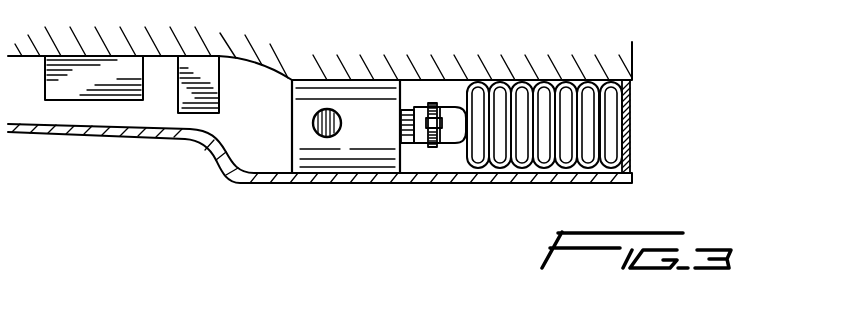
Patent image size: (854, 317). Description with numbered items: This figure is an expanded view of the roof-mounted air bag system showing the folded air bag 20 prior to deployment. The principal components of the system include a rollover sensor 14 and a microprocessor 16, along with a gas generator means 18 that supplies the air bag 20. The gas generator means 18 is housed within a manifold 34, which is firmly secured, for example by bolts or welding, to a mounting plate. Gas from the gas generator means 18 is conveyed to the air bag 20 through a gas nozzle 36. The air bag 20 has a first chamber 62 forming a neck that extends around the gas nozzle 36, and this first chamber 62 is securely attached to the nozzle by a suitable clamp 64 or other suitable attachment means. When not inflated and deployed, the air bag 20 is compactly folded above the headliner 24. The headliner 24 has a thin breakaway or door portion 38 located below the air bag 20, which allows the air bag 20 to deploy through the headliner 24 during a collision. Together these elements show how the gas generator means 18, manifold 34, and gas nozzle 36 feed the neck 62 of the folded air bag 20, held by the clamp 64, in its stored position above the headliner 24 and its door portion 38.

The rollover sensor 14 is at (177, 104).
The microprocessor 16 is at (98, 100).
The gas generator means 18 is at (330, 108).
The air bag 20 is at (525, 162).
The headliner 24 is at (232, 182).
The manifold 34 is at (345, 142).
The gas nozzle 36 is at (408, 146).
The breakaway or door portion 38 is at (630, 115).
The first chamber 62 is at (452, 117).
The clamp 64 is at (433, 147).